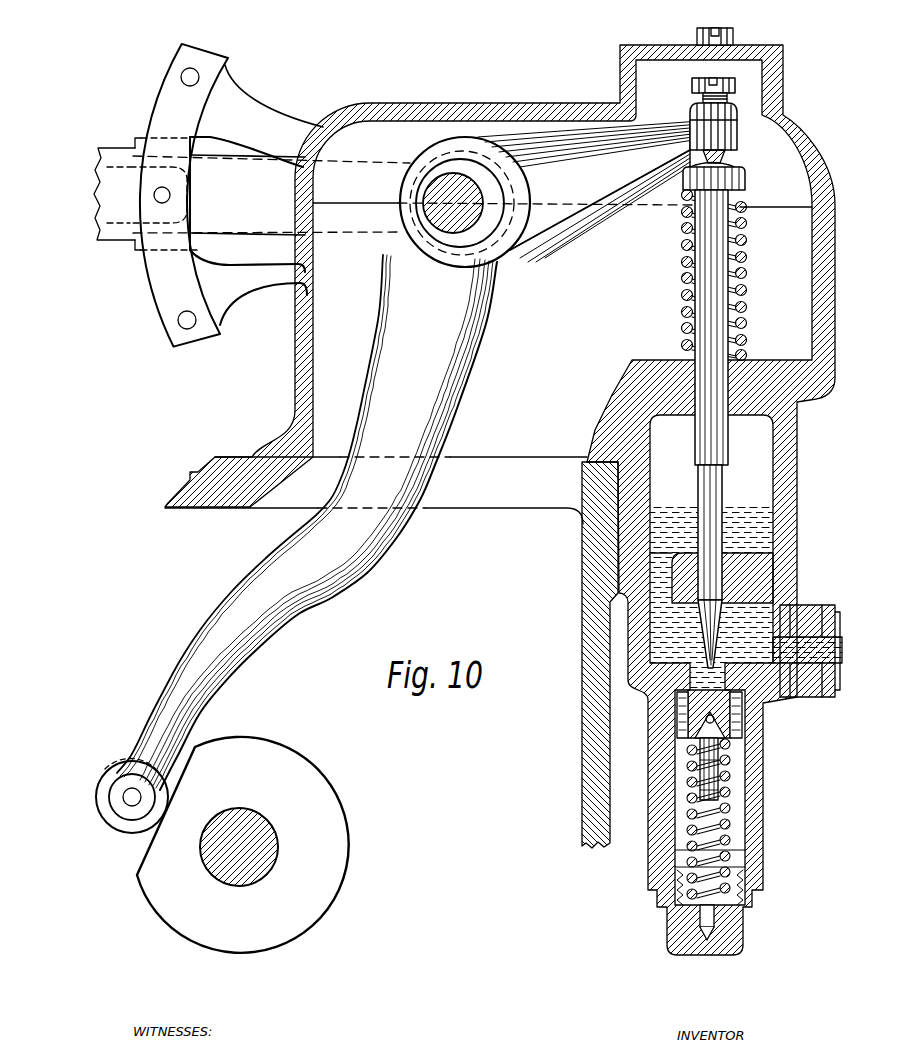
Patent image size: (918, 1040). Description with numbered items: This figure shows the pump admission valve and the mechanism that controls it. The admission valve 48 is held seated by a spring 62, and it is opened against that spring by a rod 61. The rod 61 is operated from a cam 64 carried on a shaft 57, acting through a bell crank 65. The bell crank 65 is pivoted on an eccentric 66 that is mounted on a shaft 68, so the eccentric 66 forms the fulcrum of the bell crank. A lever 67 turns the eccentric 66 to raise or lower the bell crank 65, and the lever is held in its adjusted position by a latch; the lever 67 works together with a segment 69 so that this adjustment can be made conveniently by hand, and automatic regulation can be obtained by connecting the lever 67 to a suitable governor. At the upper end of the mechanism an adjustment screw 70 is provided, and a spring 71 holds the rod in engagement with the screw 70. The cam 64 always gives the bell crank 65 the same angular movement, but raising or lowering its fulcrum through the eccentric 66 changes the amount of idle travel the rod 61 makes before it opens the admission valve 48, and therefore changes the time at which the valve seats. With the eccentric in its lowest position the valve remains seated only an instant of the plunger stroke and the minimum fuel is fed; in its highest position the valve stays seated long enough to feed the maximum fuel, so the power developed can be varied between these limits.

The admission valve 48 is at (712, 712).
The shaft 57 is at (252, 820).
The rod 61 is at (713, 493).
The spring 62 is at (707, 807).
The cam 64 is at (333, 842).
The bell crank 65 is at (395, 421).
The eccentric 66 is at (480, 233).
The lever 67 is at (256, 195).
The shaft 68 is at (433, 213).
The segment 69 is at (170, 280).
The adjustment screw 70 is at (692, 87).
The spring 71 is at (742, 289).